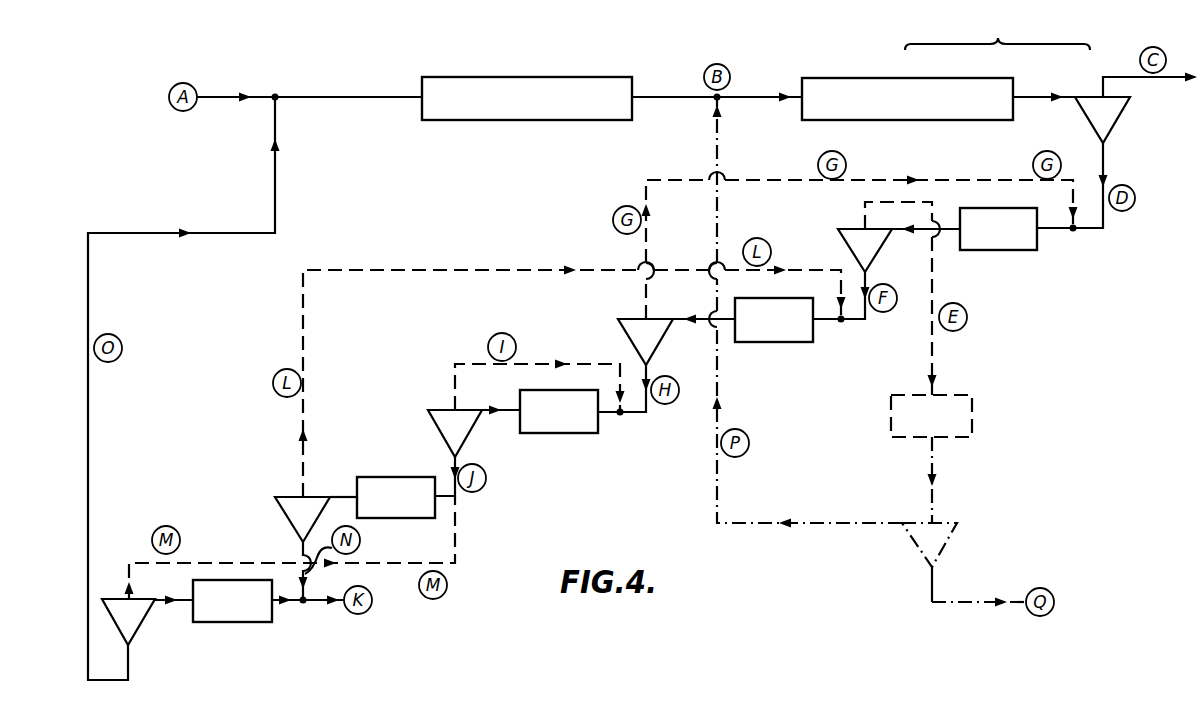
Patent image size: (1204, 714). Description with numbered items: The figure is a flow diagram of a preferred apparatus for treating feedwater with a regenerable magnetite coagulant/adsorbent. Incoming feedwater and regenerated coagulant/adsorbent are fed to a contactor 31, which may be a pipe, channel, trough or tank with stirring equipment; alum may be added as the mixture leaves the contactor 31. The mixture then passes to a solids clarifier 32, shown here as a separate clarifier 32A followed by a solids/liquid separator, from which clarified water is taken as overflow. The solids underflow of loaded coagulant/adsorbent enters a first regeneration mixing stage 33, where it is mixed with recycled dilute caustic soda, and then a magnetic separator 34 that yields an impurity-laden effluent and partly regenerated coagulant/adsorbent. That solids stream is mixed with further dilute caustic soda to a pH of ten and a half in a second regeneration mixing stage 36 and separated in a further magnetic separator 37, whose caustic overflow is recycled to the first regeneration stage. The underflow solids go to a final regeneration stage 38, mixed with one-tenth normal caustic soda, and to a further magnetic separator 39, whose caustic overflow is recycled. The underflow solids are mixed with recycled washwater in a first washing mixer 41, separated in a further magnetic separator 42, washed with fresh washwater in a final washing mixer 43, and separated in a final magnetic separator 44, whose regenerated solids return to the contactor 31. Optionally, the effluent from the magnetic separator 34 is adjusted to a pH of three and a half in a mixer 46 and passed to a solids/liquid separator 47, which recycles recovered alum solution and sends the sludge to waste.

The contactor 31 is at (503, 109).
The solids clarifier 32 is at (1147, 108).
The separate clarifier 32A is at (888, 110).
The first regeneration mixing stage 33 is at (986, 241).
The magnetic separator 34 is at (838, 229).
The second regeneration mixing stage 36 is at (762, 332).
The further magnetic separator 37 is at (618, 319).
The final regeneration stage 38 is at (547, 424).
The further magnetic separator 39 is at (428, 410).
The first washing mixer 41 is at (384, 509).
The further magnetic separator 42 is at (275, 497).
The final washing mixer 43 is at (221, 613).
The final magnetic separator 44 is at (149, 610).
The mixer 46 is at (919, 427).
The solids/liquid separator 47 is at (952, 540).